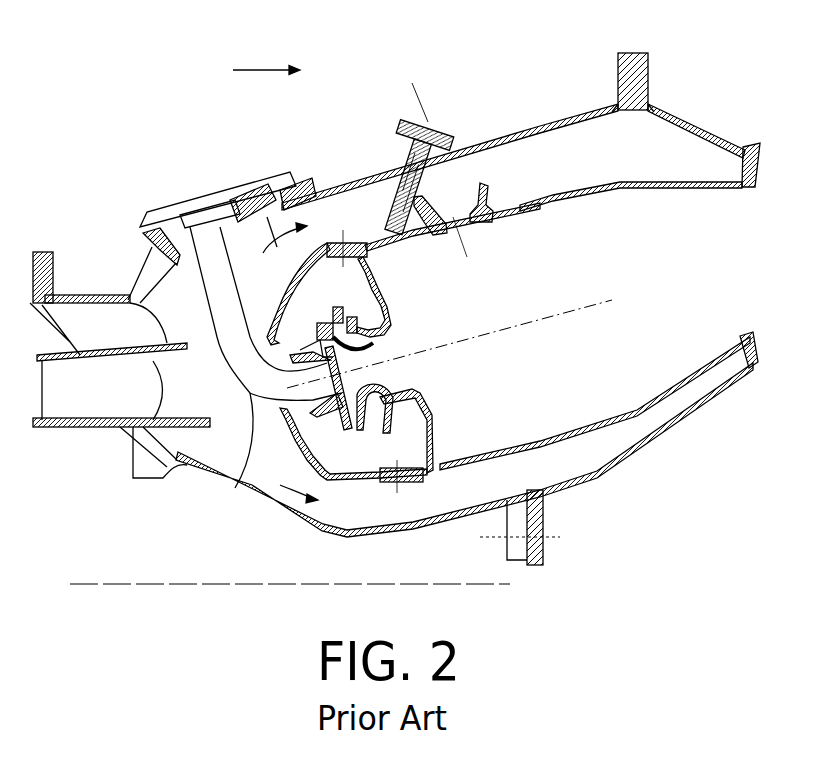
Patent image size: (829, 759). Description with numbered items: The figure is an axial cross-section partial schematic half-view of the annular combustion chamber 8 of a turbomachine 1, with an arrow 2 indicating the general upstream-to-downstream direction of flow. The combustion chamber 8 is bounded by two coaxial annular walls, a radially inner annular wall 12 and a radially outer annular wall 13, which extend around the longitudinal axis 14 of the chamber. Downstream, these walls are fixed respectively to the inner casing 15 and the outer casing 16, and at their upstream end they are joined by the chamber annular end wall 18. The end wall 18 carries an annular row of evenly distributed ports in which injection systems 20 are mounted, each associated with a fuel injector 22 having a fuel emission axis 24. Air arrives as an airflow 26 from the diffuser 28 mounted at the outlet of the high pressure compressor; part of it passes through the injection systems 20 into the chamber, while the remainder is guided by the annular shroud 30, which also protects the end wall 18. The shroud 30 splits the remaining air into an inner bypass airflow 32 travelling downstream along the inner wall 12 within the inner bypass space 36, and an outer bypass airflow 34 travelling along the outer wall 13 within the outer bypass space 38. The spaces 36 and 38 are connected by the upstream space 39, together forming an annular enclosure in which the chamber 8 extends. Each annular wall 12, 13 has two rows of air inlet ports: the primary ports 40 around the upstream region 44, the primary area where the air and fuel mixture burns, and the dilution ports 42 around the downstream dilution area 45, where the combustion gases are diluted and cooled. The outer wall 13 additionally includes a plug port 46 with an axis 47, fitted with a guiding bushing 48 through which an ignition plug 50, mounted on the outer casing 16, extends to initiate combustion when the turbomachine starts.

The gas turbine engine 1 is at (533, 70).
The flow direction 2 is at (268, 68).
The combustion chamber 8 is at (713, 241).
The radially inner annular wall 12 is at (518, 448).
The radially outer annular wall 13 is at (675, 186).
The longitudinal axis 14 is at (88, 583).
The inner casing 15 is at (487, 500).
The outer casing 16 is at (497, 130).
The chamber annular end wall 18 is at (433, 452).
The injection system 20 is at (388, 335).
The fuel injector 22 is at (267, 388).
The fuel emission axis 24 is at (612, 300).
The airflow 26 is at (166, 391).
The diffuser 28 is at (117, 303).
The annular shroud 30 is at (370, 477).
The inner bypass airflow 32 is at (280, 497).
The outer bypass airflow 34 is at (266, 184).
The inner bypass space 36 is at (647, 423).
The outer bypass space 38 is at (653, 133).
The upstream space 39 is at (214, 396).
The primary ports 40 is at (535, 216).
The dilution ports 42 is at (549, 209).
The upstream region (primary area) 44 is at (411, 244).
The dilution area 45 is at (588, 418).
The plug port 46 is at (467, 233).
The plug port axis 47 is at (410, 93).
The guiding bushing 48 is at (473, 193).
The ignition plug 50 is at (437, 132).